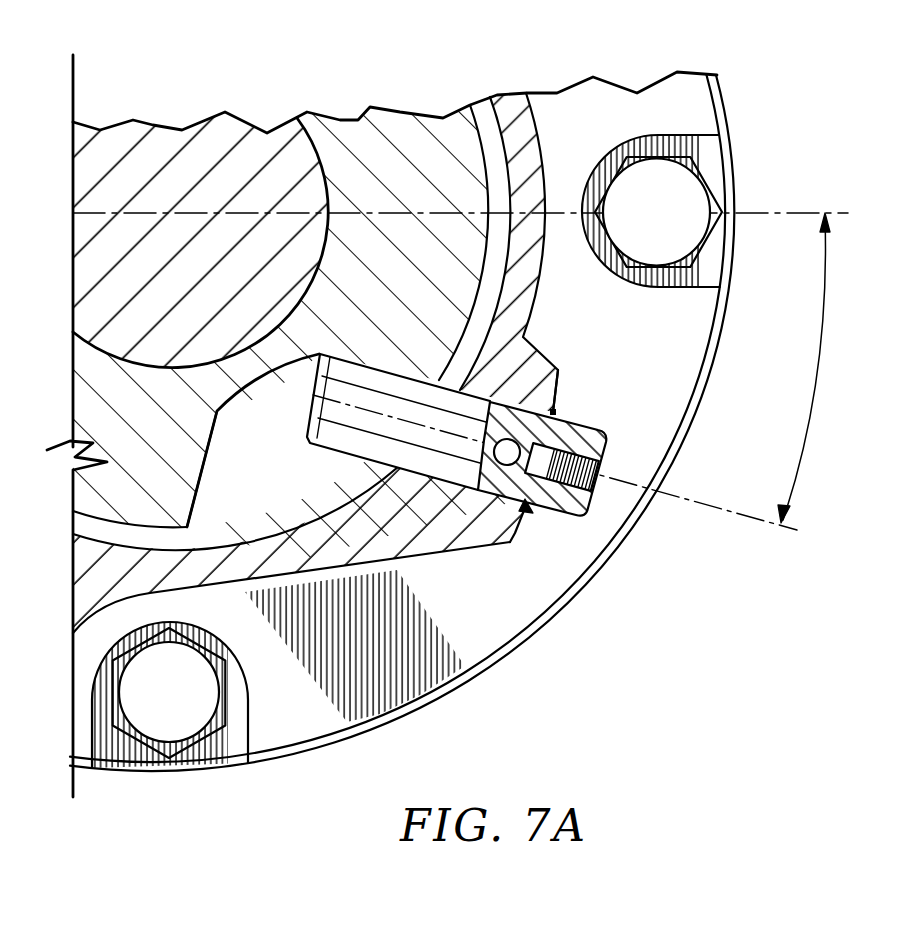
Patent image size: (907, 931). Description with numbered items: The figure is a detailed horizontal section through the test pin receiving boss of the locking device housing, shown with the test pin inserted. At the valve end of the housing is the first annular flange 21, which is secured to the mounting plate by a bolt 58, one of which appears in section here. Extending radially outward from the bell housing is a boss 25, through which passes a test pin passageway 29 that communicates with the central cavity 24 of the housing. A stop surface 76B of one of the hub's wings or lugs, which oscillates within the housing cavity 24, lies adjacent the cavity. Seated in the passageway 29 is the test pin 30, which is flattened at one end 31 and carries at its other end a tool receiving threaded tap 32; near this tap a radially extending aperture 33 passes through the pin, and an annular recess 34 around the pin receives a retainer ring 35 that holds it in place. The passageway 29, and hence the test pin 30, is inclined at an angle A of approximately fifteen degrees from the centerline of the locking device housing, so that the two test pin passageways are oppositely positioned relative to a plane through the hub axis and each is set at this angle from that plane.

The first annular flange 21 is at (553, 620).
The central cavity 24 is at (280, 510).
The boss 25 is at (443, 551).
The test pin passageway 29 is at (500, 505).
The test pin 30 is at (640, 410).
The flattened end 31 is at (307, 422).
The threaded tap 32 is at (603, 472).
The radially extending aperture 33 is at (496, 442).
The annular recess 34 is at (527, 507).
The retainer ring 35 is at (554, 412).
The bolt 58 is at (707, 192).
The stop surface 76B is at (210, 443).
The angle A is at (816, 368).